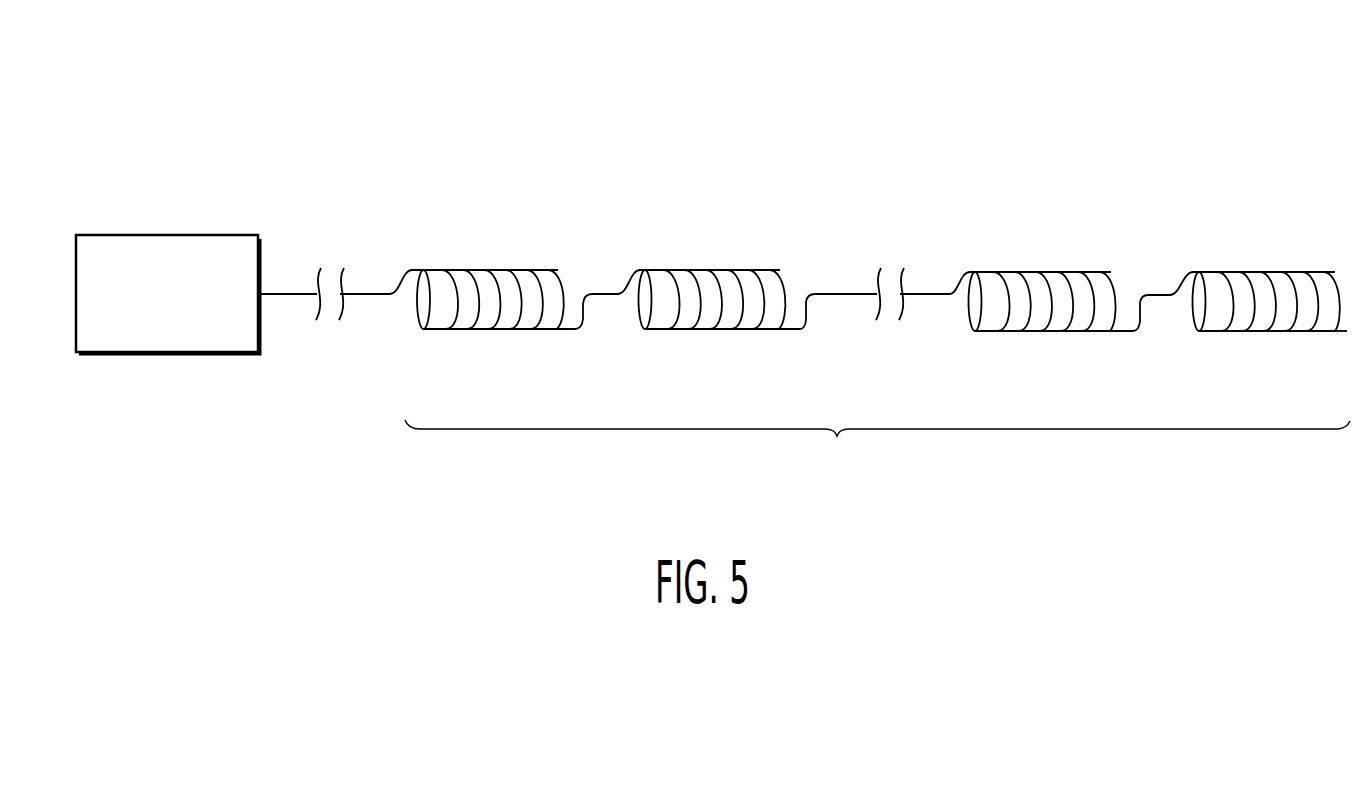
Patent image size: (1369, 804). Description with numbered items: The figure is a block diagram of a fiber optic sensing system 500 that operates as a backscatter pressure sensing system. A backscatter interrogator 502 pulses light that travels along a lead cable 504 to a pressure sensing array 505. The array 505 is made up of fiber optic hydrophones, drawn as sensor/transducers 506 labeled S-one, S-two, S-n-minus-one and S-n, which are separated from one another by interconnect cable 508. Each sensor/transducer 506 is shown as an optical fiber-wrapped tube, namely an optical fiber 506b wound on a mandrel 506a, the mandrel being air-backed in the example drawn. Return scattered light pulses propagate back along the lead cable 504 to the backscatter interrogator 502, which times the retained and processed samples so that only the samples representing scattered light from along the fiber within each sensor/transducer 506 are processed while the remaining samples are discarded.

The fiber optic sensing system 500 is at (968, 100).
The backscatter interrogator 502 is at (105, 235).
The lead cable 504 is at (283, 293).
The pressure sensing array 505 is at (877, 446).
The sensor/transducer 506 is at (478, 270).
The mandrel 506a is at (417, 322).
The optical fiber 506b is at (545, 292).
The interconnect cable 508 is at (607, 296).